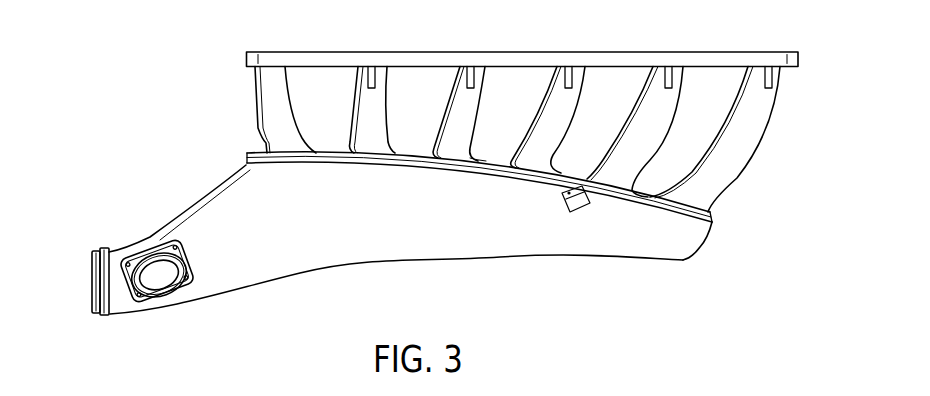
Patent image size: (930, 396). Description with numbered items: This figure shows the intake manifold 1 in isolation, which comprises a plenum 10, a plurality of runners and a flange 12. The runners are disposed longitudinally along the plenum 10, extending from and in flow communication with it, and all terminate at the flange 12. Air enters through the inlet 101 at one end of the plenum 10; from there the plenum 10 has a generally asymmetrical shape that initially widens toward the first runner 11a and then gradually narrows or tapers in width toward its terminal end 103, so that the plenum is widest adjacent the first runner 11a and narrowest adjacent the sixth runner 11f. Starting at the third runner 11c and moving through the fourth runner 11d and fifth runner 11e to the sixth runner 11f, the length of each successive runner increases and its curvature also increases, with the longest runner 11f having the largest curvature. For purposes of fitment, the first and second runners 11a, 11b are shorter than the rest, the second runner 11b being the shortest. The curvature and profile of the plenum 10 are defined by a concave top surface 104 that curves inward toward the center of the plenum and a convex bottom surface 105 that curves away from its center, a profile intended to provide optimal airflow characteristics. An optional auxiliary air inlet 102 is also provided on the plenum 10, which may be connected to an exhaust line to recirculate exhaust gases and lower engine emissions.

The intake manifold 1 is at (149, 119).
The plenum 10 is at (507, 246).
The first runner 11a is at (272, 103).
The second runner 11b is at (370, 105).
The third runner 11c is at (460, 118).
The fourth runner 11d is at (553, 107).
The fifth runner 11e is at (647, 127).
The sixth runner 11f is at (738, 133).
The flange 12 is at (272, 58).
The inlet 101 is at (86, 281).
The auxiliary air inlet 102 is at (162, 272).
The terminal end 103 is at (701, 247).
The concave top surface 104 is at (403, 267).
The convex bottom surface 105 is at (480, 160).